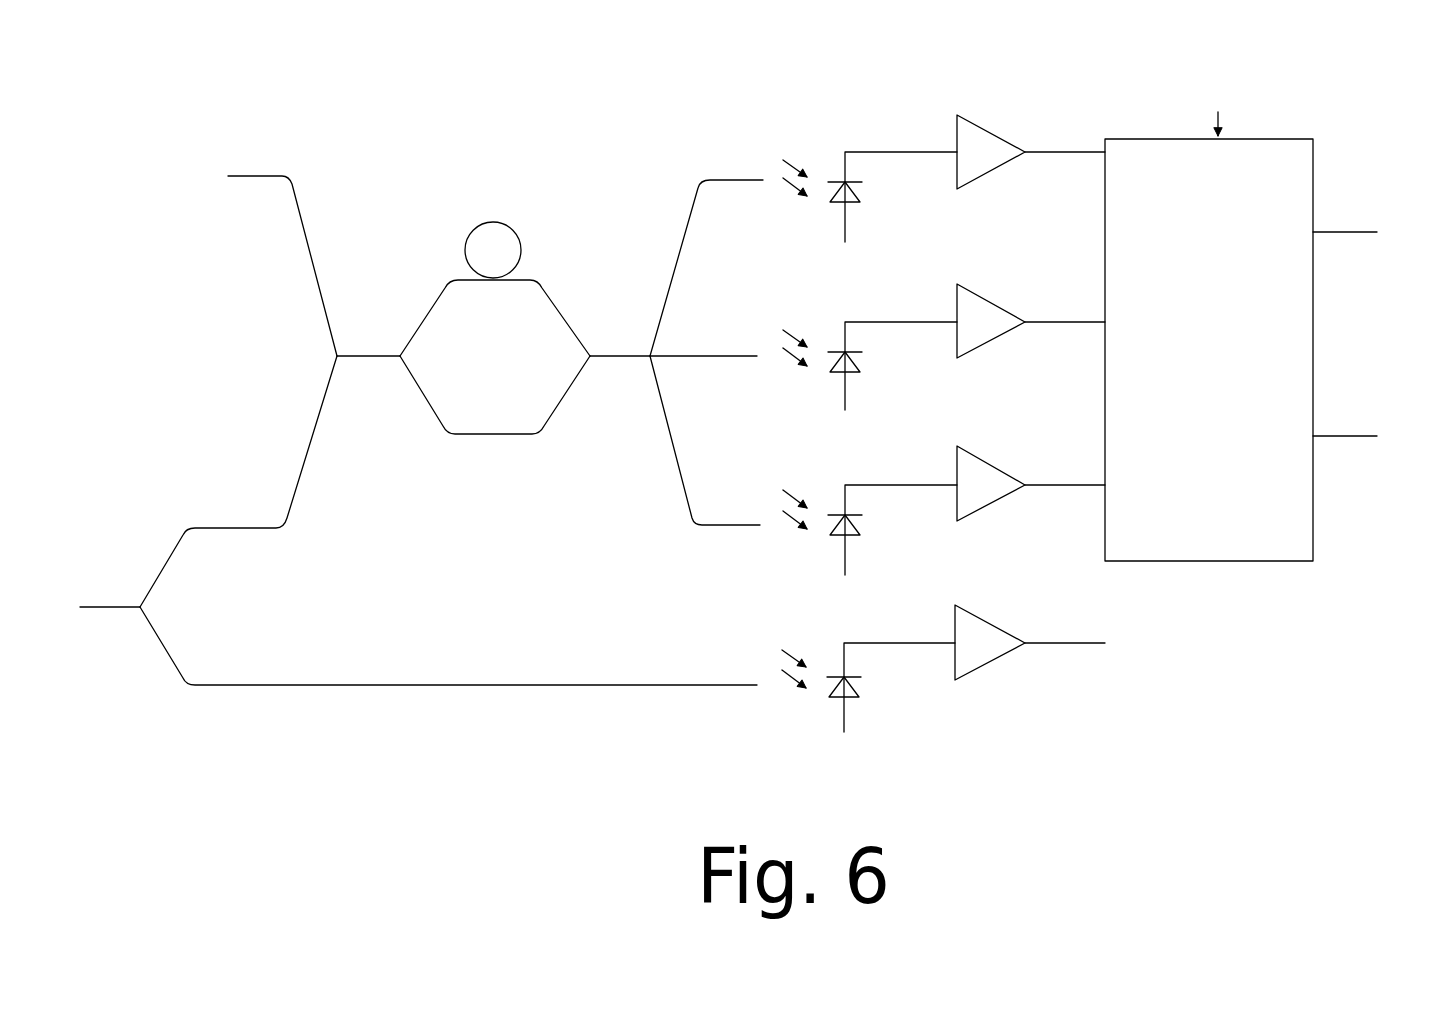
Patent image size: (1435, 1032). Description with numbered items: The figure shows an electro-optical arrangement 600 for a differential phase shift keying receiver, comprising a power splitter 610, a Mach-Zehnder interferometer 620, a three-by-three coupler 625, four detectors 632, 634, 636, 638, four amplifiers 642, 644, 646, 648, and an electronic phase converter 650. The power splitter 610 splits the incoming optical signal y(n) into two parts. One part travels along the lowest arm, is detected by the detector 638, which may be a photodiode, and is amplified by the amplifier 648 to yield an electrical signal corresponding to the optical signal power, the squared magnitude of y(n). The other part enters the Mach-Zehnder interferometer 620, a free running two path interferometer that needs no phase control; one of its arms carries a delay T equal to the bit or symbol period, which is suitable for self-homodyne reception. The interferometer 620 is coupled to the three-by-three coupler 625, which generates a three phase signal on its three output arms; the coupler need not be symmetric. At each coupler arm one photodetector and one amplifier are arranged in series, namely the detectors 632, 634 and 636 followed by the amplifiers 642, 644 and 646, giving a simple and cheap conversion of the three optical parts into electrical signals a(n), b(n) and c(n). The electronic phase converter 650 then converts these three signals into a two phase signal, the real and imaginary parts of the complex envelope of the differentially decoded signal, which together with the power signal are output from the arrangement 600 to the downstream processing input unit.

The electro-optical arrangement 600 is at (312, 112).
The power splitter 610 is at (117, 597).
The Mach-Zehnder interferometer 620 is at (416, 445).
The 3×3 coupler 625 is at (637, 323).
The detector 632 is at (859, 226).
The detector 634 is at (861, 392).
The detector 636 is at (861, 548).
The detector 638 is at (860, 712).
The amplifier 642 is at (993, 170).
The amplifier 644 is at (993, 340).
The amplifier 646 is at (993, 503).
The amplifier 648 is at (993, 661).
The electronic phase converter 650 is at (1270, 304).